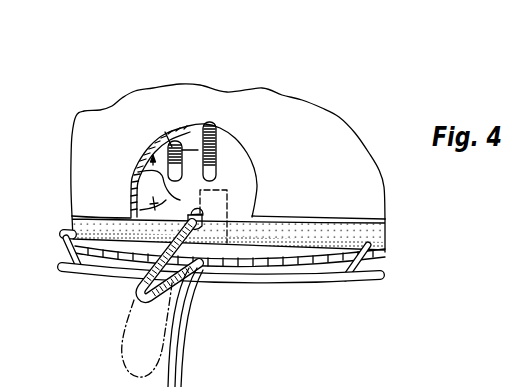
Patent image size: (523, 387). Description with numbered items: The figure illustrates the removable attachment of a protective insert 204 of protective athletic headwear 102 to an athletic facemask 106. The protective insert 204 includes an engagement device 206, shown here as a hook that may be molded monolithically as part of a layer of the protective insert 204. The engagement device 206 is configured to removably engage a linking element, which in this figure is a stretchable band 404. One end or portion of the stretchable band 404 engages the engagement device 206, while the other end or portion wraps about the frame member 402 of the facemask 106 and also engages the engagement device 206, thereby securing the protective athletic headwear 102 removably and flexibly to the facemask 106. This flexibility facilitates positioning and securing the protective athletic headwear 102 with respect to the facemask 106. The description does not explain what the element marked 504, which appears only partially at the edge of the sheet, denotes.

The protective athletic headwear 102 is at (323, 96).
The athletic facemask 106 is at (406, 249).
The protective insert 204 is at (264, 50).
The engagement device 206 is at (124, 269).
The frame member 402 is at (186, 304).
The stretchable band 404 is at (137, 281).
The suture end 504 is at (476, 383).